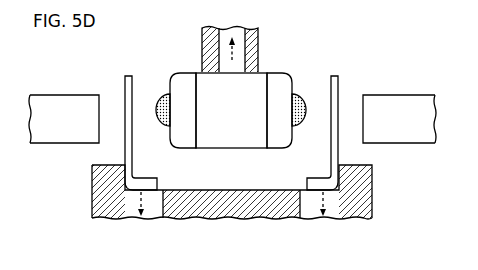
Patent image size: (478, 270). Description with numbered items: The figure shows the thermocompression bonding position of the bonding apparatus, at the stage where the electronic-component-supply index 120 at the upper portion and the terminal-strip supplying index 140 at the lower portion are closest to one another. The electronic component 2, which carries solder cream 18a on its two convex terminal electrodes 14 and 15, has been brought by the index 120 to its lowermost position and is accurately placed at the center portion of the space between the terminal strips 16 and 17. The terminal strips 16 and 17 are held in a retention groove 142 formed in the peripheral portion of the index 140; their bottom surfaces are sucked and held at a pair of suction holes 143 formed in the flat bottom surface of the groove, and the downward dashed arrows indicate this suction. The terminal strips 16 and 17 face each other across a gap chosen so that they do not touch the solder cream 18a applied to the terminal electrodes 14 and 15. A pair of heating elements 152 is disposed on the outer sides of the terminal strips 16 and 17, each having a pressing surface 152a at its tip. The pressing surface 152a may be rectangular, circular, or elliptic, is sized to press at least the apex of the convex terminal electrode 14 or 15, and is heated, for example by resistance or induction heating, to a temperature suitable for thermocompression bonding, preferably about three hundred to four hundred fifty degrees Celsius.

The electronic component 2 is at (230, 140).
The terminal electrode 14 is at (182, 142).
The terminal electrode 15 is at (277, 143).
The terminal strip 16 is at (125, 143).
The terminal strip 17 is at (335, 140).
The solder cream 18a is at (163, 97).
The electronic-component-supply index 120 is at (258, 40).
The terminal-strip supplying index 140 is at (368, 198).
The retention groove 142 is at (217, 190).
The suction hole 143 is at (134, 219).
The heating element 152 is at (60, 107).
The pressing surface 152a is at (106, 108).